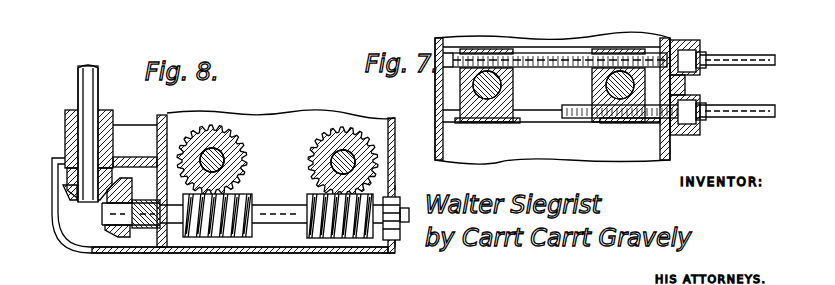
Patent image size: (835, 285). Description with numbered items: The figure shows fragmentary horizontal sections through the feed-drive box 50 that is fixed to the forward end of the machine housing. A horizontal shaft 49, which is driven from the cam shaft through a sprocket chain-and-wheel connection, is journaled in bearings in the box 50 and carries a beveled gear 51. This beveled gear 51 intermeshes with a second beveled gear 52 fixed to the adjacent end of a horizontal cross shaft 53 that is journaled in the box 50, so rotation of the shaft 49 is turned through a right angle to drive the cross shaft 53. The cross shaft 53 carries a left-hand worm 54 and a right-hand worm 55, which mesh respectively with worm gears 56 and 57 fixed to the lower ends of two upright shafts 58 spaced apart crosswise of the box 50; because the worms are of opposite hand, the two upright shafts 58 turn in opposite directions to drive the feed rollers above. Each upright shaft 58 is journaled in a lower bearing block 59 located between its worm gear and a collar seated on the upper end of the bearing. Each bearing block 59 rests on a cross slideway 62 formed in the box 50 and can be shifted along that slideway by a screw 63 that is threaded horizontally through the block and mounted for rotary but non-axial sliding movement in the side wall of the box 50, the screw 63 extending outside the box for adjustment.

In FIG. 8, the horizontal shaft 49 is at (80, 82).
In FIG. 8, the box 50 is at (52, 231).
In FIG. 8, the beveled gear 51 is at (66, 193).
In FIG. 8, the beveled gear 52 is at (115, 238).
In FIG. 8, the horizontal cross shaft 53 is at (136, 229).
In FIG. 8, the left-hand worm 54 is at (216, 238).
In FIG. 8, the right-hand worm 55 is at (333, 239).
In FIG. 8, the worm gear 56 is at (246, 160).
In FIG. 8, the worm gear 57 is at (352, 127).
In FIG. 8, the upright shaft 58 is at (219, 127).
In FIG. 7, the upright shaft 58 is at (485, 104).
In FIG. 7, the lower bearing block 59 is at (627, 47).
In FIG. 7, the cross slideway 62 is at (550, 112).
In FIG. 7, the screw 63 is at (549, 56).